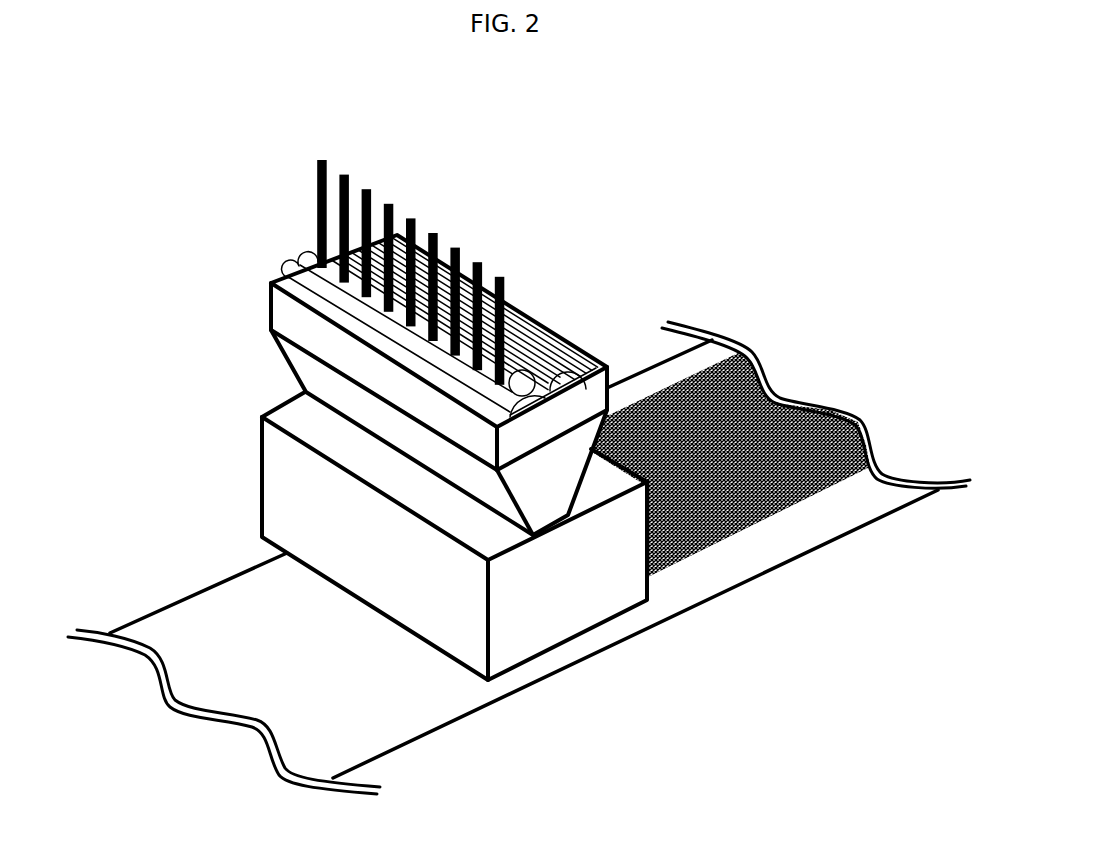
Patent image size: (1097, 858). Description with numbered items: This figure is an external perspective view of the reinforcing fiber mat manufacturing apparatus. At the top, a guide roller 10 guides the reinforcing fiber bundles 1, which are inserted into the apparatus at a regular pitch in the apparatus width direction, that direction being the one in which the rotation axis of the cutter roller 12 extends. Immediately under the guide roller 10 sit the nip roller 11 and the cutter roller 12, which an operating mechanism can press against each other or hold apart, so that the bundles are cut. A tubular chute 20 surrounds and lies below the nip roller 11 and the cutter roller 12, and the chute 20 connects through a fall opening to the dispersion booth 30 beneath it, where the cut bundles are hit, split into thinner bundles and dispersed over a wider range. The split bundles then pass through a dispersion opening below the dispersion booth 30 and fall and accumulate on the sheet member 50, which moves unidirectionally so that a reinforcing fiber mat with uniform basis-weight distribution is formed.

The reinforcing fiber bundle 1 is at (370, 192).
The guide roller 10 is at (310, 248).
The nip roller 11 is at (307, 285).
The cutter roller 12 is at (541, 357).
The chute 20 is at (318, 338).
The dispersion booth 30 is at (307, 523).
The sheet member 50 is at (253, 612).